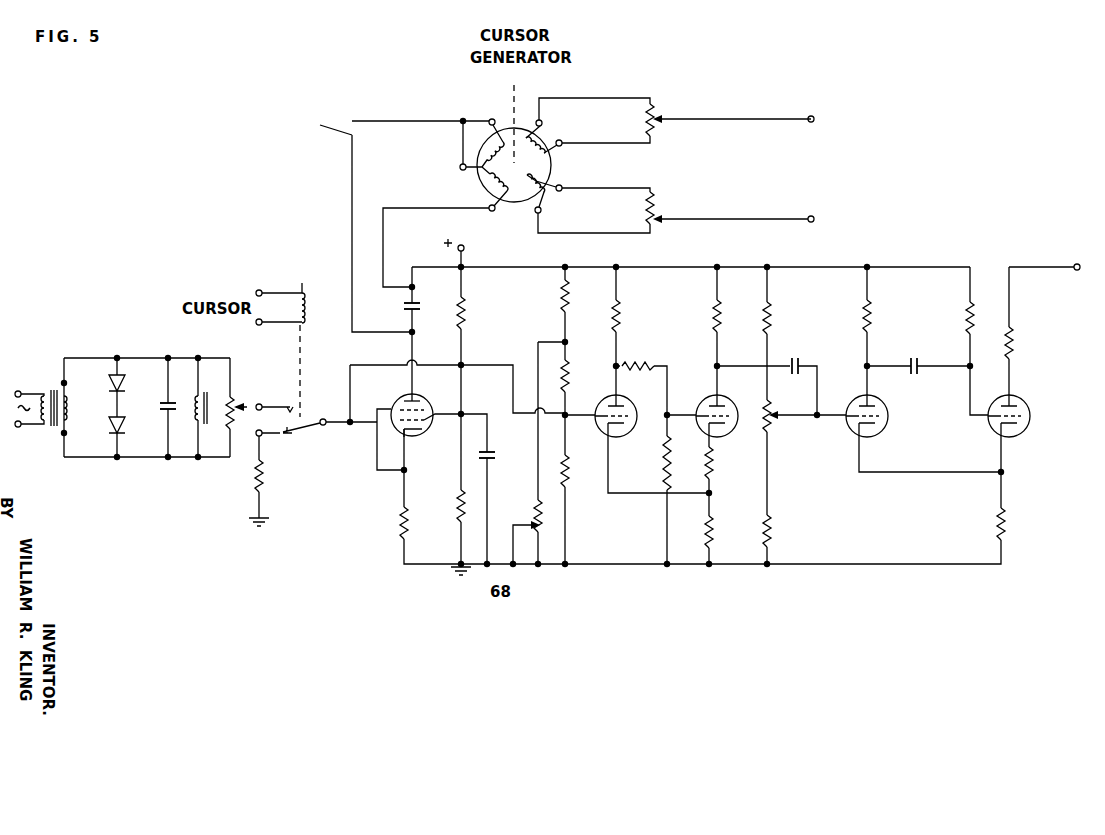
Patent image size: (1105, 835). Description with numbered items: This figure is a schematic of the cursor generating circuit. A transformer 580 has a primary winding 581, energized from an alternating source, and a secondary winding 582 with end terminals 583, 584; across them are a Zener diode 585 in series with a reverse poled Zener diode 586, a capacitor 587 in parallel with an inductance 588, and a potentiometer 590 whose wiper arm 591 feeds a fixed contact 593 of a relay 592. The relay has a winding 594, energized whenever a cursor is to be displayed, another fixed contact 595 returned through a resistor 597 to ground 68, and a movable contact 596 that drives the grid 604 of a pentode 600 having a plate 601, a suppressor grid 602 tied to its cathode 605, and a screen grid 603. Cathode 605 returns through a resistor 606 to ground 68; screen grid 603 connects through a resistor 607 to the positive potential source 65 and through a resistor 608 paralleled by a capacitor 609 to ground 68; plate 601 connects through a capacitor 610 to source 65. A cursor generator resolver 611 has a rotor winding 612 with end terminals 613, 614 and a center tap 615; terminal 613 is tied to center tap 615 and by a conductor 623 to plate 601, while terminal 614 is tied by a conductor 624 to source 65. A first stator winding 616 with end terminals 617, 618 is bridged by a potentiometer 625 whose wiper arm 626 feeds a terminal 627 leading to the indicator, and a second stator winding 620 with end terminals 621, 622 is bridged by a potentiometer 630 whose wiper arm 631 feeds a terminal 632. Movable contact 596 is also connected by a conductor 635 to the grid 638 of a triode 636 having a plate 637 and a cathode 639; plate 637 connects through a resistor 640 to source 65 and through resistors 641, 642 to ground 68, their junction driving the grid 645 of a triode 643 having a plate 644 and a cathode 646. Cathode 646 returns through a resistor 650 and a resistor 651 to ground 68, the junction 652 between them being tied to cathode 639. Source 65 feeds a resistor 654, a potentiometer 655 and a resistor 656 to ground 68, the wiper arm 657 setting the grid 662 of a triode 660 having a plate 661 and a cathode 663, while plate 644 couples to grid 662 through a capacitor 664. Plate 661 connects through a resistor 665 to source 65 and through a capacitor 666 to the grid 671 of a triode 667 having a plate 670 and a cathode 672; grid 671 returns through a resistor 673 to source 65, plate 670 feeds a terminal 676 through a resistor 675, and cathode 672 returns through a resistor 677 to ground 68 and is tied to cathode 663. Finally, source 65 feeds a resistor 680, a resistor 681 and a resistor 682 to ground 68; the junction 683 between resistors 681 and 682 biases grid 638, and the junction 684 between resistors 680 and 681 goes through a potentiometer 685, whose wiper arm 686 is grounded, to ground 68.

The positive potential source 65 is at (465, 249).
The ground 68 is at (702, 582).
The transformer 580 is at (49, 462).
The primary winding 581 is at (44, 392).
The secondary winding 582 is at (66, 409).
The end terminal 583 is at (64, 380).
The end terminal 584 is at (66, 436).
The Zener diode 585 is at (125, 386).
The reverse poled Zener diode 586 is at (122, 430).
The capacitor 587 is at (168, 410).
The inductance 588 is at (196, 396).
The potentiometer 590 is at (232, 398).
The wiper arm 591 is at (260, 404).
The relay 592 is at (342, 352).
The fixed contact 593 is at (280, 428).
The winding 594 is at (306, 300).
The fixed contact 595 is at (284, 437).
The movable contact 596 is at (322, 418).
The resistor 597 is at (262, 478).
The pentode 600 is at (426, 434).
The plate 601 is at (404, 395).
The suppressor grid 602 is at (412, 394).
The screen grid 603 is at (433, 420).
The grid 604 is at (395, 420).
The cathode 605 is at (410, 438).
The resistor 606 is at (400, 522).
The resistor 607 is at (465, 310).
The resistor 608 is at (457, 505).
The capacitor 609 is at (490, 452).
The capacitor 610 is at (414, 304).
The cursor generator resolver 611 is at (526, 204).
The rotor winding 612 is at (487, 182).
The end terminal 613 is at (490, 118).
The end terminal 614 is at (486, 210).
The center tap terminal 615 is at (459, 167).
The first stator winding 616 is at (550, 152).
The end terminal 617 is at (540, 120).
The end terminal 618 is at (560, 140).
The second stator winding 620 is at (548, 174).
The end terminal 621 is at (562, 190).
The end terminal 622 is at (540, 213).
The conductor 623 is at (321, 224).
The conductor 624 is at (383, 208).
The potentiometer 625 is at (649, 120).
The wiper arm 626 is at (662, 118).
The terminal 627 is at (811, 116).
The potentiometer 630 is at (658, 190).
The wiper arm 631 is at (665, 216).
The terminal 632 is at (811, 216).
The conductor 635 is at (410, 360).
The triode 636 is at (620, 436).
The plate 637 is at (617, 400).
The grid 638 is at (626, 412).
The cathode 639 is at (605, 424).
The resistor 640 is at (619, 310).
The resistor 641 is at (640, 360).
The resistor 642 is at (662, 460).
The triode 643 is at (712, 456).
The plate 644 is at (720, 400).
The grid 645 is at (726, 426).
The cathode 646 is at (709, 440).
The resistor 650 is at (710, 475).
The resistor 651 is at (710, 530).
The junction 652 is at (712, 494).
The resistor 654 is at (777, 306).
The potentiometer 655 is at (712, 314).
The resistor 656 is at (770, 528).
The wiper arm 657 is at (782, 414).
The triode 660 is at (887, 418).
The plate 661 is at (878, 398).
The grid 662 is at (884, 414).
The cathode 663 is at (872, 436).
The capacitor 664 is at (797, 360).
The resistor 665 is at (872, 308).
The capacitor 666 is at (912, 358).
The triode 667 is at (1031, 414).
The plate 670 is at (1012, 398).
The grid 671 is at (1000, 424).
The cathode 672 is at (1016, 436).
The resistor 673 is at (968, 316).
The resistor 675 is at (1012, 330).
The terminal 676 is at (1077, 264).
The resistor 677 is at (1004, 515).
The resistor 680 is at (562, 298).
The resistor 681 is at (566, 365).
The resistor 682 is at (566, 478).
The junction 683 is at (566, 400).
The junction 684 is at (566, 340).
The potentiometer 685 is at (538, 498).
The wiper arm 686 is at (530, 524).